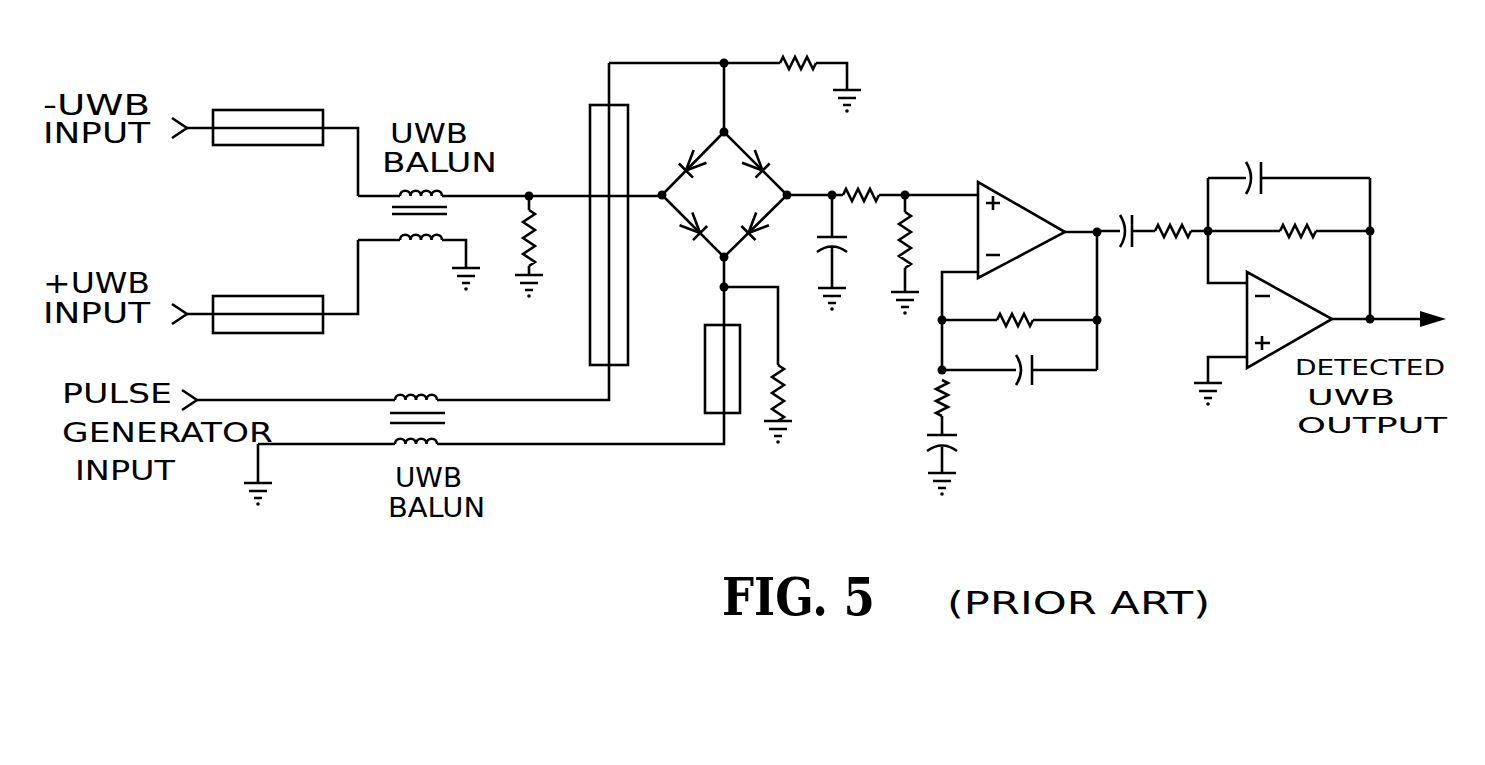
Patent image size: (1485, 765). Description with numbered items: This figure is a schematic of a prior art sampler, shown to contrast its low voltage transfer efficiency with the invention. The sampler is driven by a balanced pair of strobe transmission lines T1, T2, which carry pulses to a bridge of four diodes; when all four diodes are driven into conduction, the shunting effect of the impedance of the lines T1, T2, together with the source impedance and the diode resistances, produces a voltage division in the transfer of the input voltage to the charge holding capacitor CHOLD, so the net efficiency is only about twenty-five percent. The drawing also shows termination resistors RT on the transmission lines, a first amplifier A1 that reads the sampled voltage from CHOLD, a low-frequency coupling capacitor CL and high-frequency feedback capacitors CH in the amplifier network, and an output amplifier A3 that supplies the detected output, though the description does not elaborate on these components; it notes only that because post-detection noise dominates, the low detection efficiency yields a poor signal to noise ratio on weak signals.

The strobe transmission line T1 is at (532, 231).
The strobe transmission line T2 is at (700, 372).
The termination resistor RT is at (688, 230).
The charge holding capacitor CHOLD is at (855, 244).
The first amplifier A1 is at (1021, 230).
The output amplifier A3 is at (1289, 320).
The low-frequency coupling capacitor CL is at (1067, 337).
The high-frequency feedback capacitor CH is at (1156, 280).